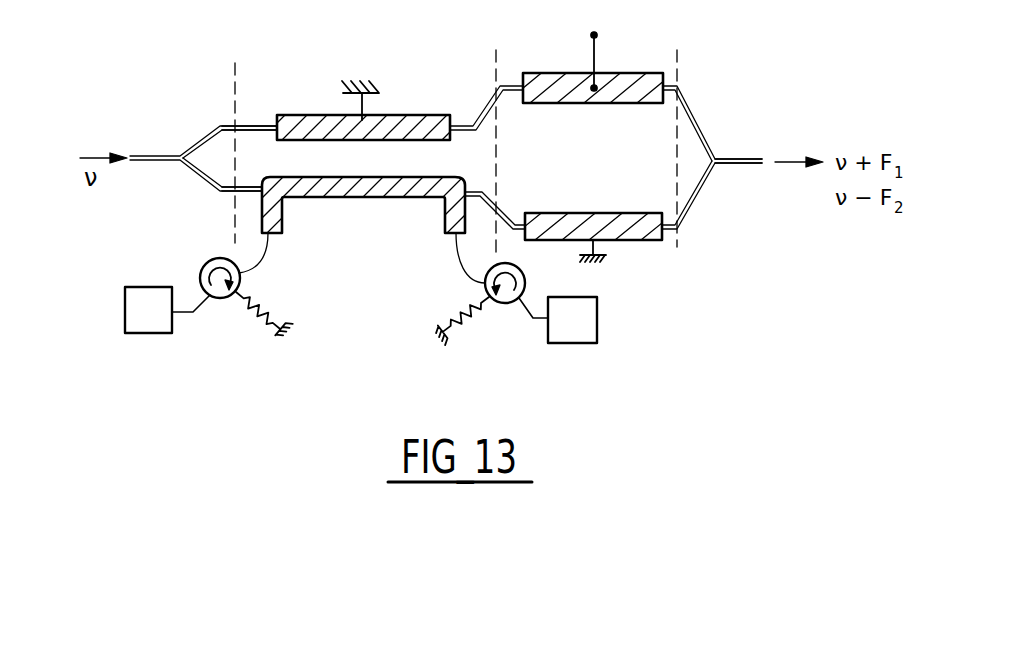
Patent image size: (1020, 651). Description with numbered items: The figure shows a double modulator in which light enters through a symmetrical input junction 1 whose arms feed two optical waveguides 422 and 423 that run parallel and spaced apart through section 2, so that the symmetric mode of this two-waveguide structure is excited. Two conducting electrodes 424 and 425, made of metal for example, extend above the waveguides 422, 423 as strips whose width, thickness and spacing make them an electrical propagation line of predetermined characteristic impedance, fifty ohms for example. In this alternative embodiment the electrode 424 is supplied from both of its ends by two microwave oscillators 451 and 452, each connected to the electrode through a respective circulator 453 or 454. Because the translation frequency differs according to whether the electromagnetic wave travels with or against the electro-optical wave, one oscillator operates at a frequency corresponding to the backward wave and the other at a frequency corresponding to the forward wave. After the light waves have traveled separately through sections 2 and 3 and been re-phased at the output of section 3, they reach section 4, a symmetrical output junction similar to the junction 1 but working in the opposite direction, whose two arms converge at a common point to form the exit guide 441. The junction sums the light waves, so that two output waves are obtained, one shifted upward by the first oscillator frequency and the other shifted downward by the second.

The input junction 1 is at (183, 200).
The section with parallel waveguides 2 is at (370, 236).
The re-phasing section 3 is at (654, 256).
The output junction section 4 is at (709, 256).
The optical waveguide 422 is at (257, 126).
The optical waveguide 423 is at (249, 187).
The conducting electrode 424 is at (403, 187).
The conducting electrode 425 is at (413, 125).
The exit guide 441 is at (745, 158).
The microwave oscillator 451 is at (130, 318).
The microwave oscillator 452 is at (578, 330).
The circulator 453 is at (224, 298).
The circulator 454 is at (525, 283).